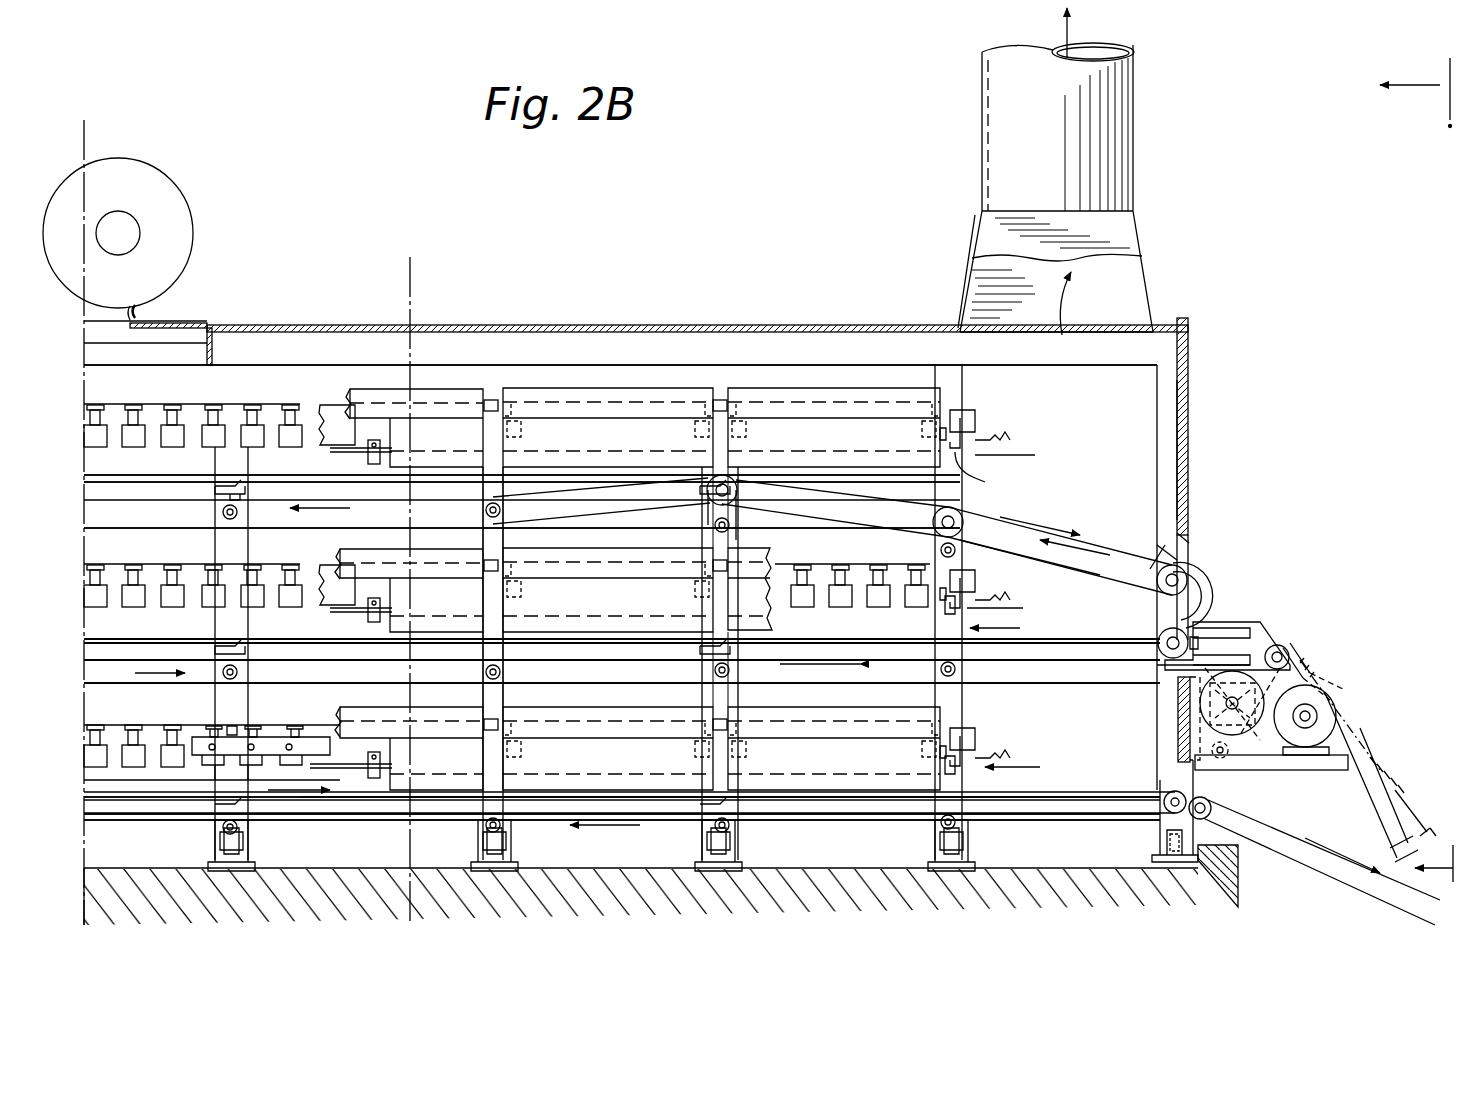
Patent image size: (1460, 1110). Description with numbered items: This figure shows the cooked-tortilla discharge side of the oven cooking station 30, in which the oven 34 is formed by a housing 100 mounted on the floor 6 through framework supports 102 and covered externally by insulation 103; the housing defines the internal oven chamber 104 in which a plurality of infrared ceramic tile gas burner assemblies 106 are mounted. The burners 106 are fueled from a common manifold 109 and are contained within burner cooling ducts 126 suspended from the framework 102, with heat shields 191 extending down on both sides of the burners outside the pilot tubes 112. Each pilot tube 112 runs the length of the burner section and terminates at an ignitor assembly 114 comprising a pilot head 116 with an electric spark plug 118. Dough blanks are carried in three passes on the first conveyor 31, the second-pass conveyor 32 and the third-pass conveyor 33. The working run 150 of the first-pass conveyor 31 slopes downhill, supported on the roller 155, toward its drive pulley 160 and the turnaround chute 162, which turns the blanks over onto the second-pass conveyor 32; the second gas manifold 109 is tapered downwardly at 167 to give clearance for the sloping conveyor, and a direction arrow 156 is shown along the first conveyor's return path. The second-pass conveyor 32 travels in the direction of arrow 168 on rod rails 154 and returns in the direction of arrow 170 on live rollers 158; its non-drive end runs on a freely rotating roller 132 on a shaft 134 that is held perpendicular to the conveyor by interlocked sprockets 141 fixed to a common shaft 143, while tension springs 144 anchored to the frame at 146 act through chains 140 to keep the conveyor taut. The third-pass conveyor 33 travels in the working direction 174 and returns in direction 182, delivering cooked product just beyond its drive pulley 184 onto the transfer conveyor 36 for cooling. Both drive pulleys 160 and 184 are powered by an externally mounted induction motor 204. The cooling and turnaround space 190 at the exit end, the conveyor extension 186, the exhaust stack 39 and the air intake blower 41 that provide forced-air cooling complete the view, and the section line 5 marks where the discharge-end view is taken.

The section line 5 is at (1416, 472).
The floor 6 is at (1030, 870).
The oven cooking station 30 is at (776, 248).
The first pass conveyor 31 is at (180, 480).
The second-pass conveyor 32 is at (210, 638).
The third-pass conveyor 33 is at (362, 805).
The oven 34 is at (1200, 390).
The transfer conveyor 36 is at (1275, 855).
The exhaust stack 39 is at (1135, 120).
The air intake blower 41 is at (180, 197).
The housing 100 is at (612, 345).
The framework supports 102 is at (525, 672).
The insulation 103 is at (1190, 468).
The internal oven chamber 104 is at (152, 472).
The infrared ceramic tile gas burner assemblies 106 is at (152, 418).
The common manifold 109 is at (290, 358).
The pilot tube 112 is at (330, 455).
The ignitor assembly 114 is at (1031, 612).
The pilot head 116 is at (985, 483).
The electric spark plug 118 is at (985, 442).
The burner cooling ducts 126 is at (810, 385).
The live roller 132 is at (1195, 630).
The spindle 134 is at (1160, 650).
The sprocket chains 140 is at (1292, 662).
The sprockets 141 is at (1290, 648).
The common shaft 143 is at (1283, 650).
The tension springs 144 is at (1360, 730).
The frame anchor 146 is at (1430, 828).
The working run 150 is at (1050, 525).
The rod rails 154 is at (575, 480).
The roller 155 is at (706, 497).
The direction arrow 156 is at (335, 508).
The live rollers 158 is at (482, 515).
The drive pulley 160 is at (1156, 576).
The turnaround chute 162 is at (1215, 580).
The tapered portion 167 is at (850, 535).
The direction arrow 168 is at (1075, 648).
The direction arrow 170 is at (152, 674).
The direction arrow 174 is at (292, 800).
The direction arrow 182 is at (597, 826).
The drive pulley 184 is at (1150, 800).
The oven input conveyor extension 186 is at (1275, 770).
The cooling and turnaround space 190 is at (1135, 422).
The heat shields 191 is at (820, 468).
The induction motor 204 is at (1340, 700).